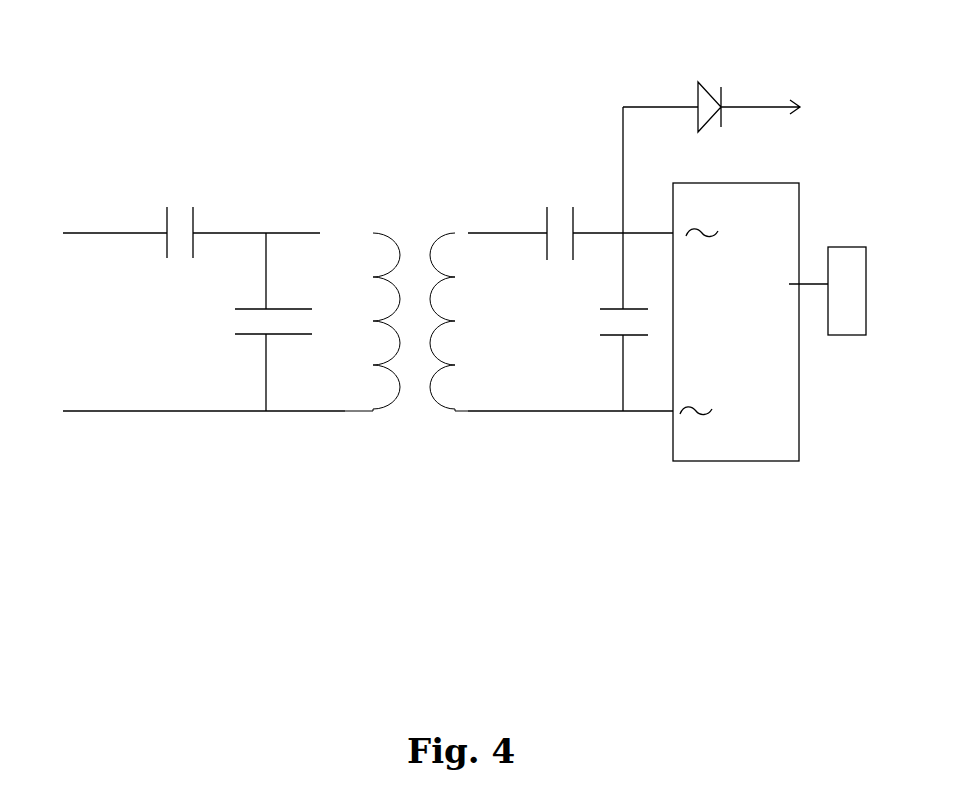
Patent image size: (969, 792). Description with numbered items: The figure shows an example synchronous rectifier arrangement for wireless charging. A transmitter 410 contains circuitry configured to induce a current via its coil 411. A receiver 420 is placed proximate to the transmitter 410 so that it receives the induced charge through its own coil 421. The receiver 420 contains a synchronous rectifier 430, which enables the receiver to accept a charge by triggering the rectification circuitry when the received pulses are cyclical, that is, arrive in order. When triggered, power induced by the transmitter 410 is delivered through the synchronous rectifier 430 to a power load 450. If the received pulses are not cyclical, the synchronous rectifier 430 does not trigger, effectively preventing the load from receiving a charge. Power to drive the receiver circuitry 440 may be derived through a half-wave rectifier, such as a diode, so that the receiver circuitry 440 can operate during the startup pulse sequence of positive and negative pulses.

The transmitter 410 is at (242, 183).
The coil 411 is at (373, 411).
The receiver 420 is at (495, 183).
The coil 421 is at (455, 411).
The synchronous rectifier 430 is at (712, 448).
The receiver circuitry 440 is at (802, 105).
The power load 450 is at (853, 315).